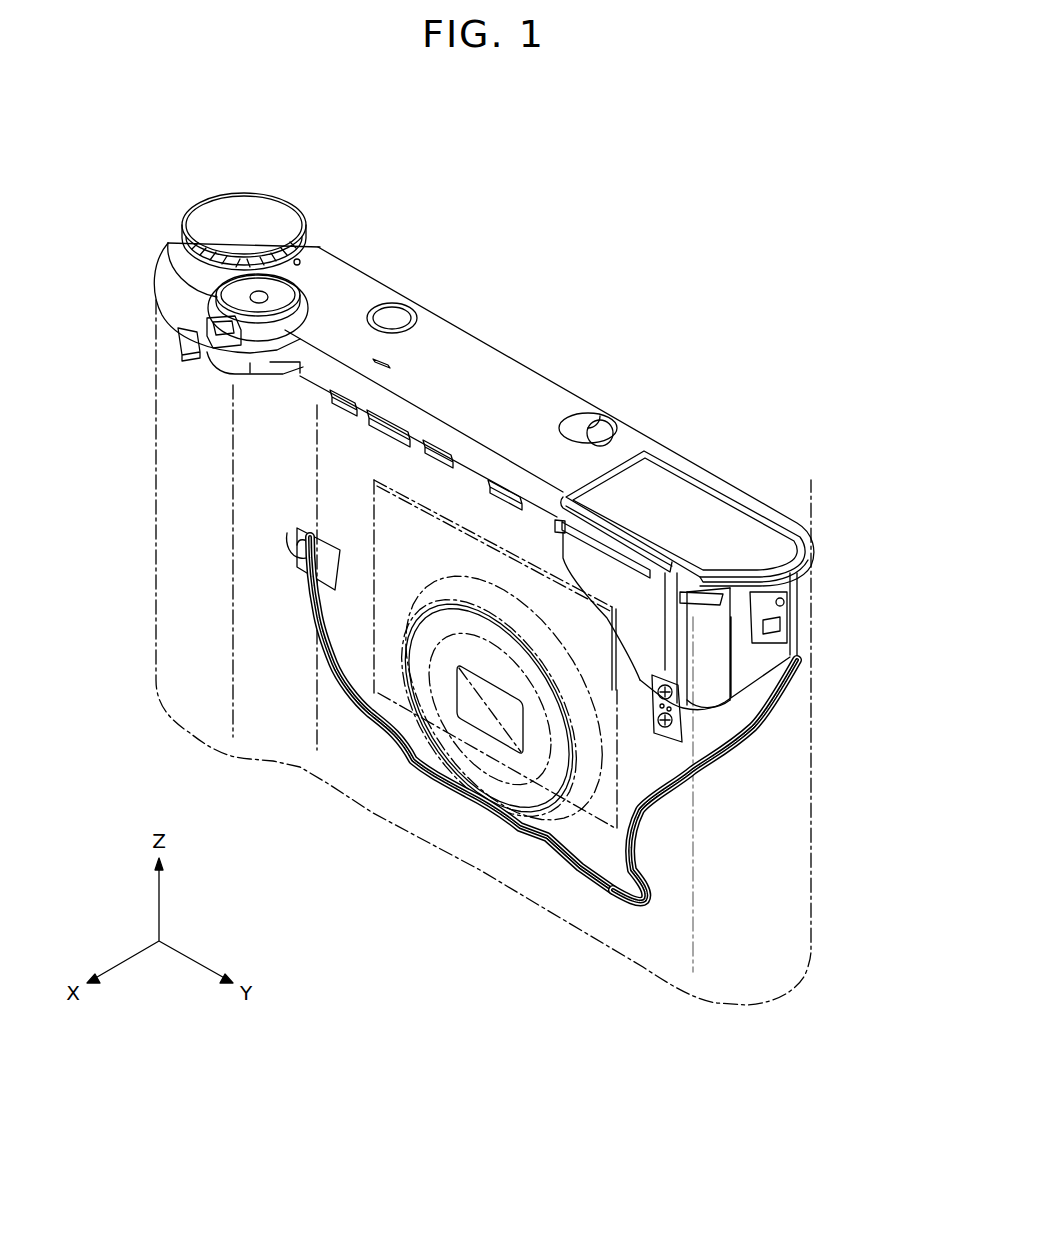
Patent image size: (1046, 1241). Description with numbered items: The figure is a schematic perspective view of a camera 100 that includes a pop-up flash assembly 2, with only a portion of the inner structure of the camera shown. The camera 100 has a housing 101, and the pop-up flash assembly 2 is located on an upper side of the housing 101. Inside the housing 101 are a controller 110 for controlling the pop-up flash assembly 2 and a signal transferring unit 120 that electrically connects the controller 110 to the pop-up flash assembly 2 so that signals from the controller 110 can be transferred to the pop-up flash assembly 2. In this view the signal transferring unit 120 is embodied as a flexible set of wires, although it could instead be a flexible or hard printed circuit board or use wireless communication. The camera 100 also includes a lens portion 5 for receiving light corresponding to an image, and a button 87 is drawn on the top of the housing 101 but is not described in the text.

The camera 100 is at (718, 278).
The housing 101 is at (500, 370).
The shutter release button 87 is at (600, 420).
The pop-up flash assembly 2 is at (717, 503).
The lens portion 5 is at (543, 798).
The controller 110 is at (400, 697).
The signal transferring unit 120 is at (637, 912).